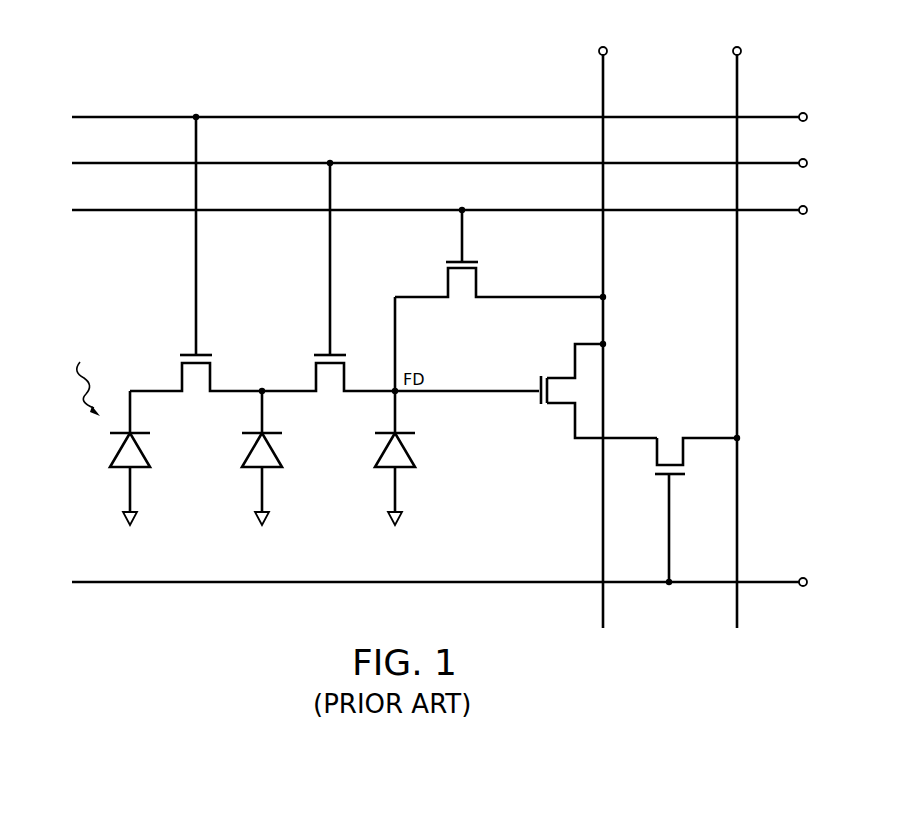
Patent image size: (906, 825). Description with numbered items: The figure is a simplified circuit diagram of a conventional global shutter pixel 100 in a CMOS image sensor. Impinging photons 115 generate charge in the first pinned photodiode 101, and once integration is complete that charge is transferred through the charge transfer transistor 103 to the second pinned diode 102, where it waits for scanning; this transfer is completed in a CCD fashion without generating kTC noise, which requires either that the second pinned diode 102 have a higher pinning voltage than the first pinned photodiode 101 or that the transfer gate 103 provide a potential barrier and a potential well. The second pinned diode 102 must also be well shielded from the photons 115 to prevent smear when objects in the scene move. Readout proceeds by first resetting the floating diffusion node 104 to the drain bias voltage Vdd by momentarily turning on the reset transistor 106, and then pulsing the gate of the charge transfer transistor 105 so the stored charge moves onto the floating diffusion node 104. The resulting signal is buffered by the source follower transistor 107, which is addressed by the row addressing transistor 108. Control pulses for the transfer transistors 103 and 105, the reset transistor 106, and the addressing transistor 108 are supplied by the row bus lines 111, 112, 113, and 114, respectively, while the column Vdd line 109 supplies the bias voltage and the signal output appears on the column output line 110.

The pixel 100 is at (110, 40).
The first pinned photodiode 101 is at (124, 456).
The second pinned diode 102 is at (256, 456).
The charge transfer transistor 103 is at (182, 378).
The floating diffusion node 104 is at (389, 456).
The charge transfer transistor 105 is at (316, 378).
The reset transistor 106 is at (448, 284).
The source follower transistor 107 is at (556, 403).
The row addressing transistor 108 is at (671, 443).
The column Vdd line 109 is at (601, 86).
The column output line 110 is at (735, 86).
The row bus line 111 is at (137, 117).
The row bus line 112 is at (137, 163).
The row bus line 113 is at (137, 210).
The row bus line 114 is at (155, 582).
The impinging photons 115 is at (84, 392).